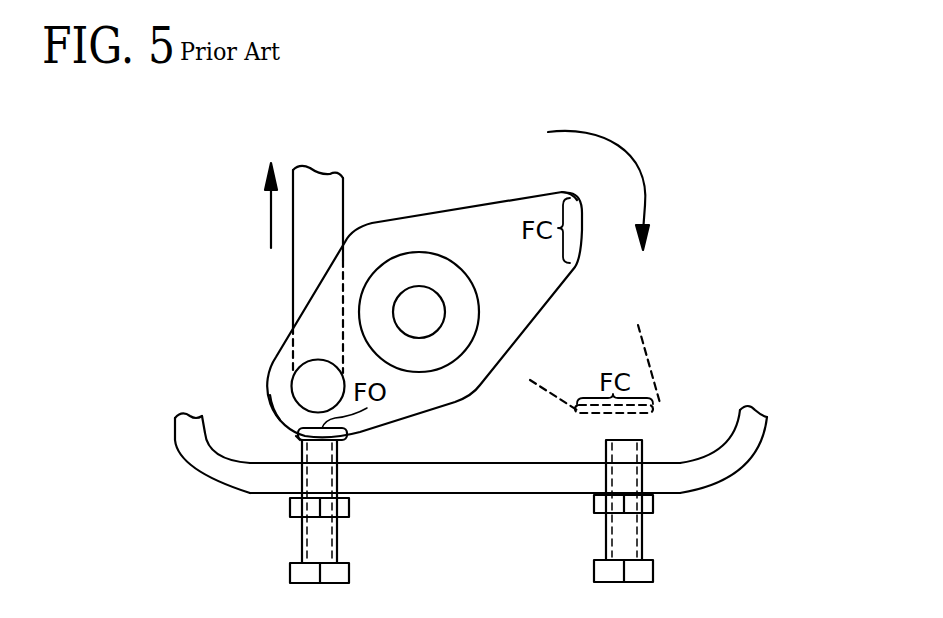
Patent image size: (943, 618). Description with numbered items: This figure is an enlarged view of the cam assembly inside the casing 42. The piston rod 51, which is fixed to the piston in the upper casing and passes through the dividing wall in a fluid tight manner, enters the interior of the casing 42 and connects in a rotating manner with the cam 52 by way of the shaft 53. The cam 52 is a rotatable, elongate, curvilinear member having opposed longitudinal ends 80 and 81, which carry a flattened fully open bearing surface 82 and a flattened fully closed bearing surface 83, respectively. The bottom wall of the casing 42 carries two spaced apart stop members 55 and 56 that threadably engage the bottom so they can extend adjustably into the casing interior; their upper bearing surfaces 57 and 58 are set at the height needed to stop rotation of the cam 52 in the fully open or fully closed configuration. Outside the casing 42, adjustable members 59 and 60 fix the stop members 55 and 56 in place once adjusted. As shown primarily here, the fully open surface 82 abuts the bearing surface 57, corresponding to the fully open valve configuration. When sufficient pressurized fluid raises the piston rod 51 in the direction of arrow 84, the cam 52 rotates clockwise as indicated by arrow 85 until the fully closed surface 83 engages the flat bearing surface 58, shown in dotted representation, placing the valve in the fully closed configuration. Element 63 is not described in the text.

The casing 42 is at (750, 450).
The piston rod 51 is at (343, 192).
The cam 52 is at (442, 243).
The shaft 53 is at (298, 366).
The stop member 55 is at (300, 534).
The stop member 56 is at (643, 532).
The upper bearing surface 57 is at (348, 437).
The upper bearing surface 58 is at (623, 440).
The adjustable member 59 is at (288, 505).
The adjustable member 60 is at (656, 504).
The cam hub 63 is at (425, 305).
The longitudinal end 80 is at (270, 410).
The longitudinal end 81 is at (562, 192).
The fully open bearing surface 82 is at (296, 436).
The fully closed bearing surface 83 is at (582, 220).
The arrow 84 is at (270, 226).
The arrow 85 is at (620, 142).